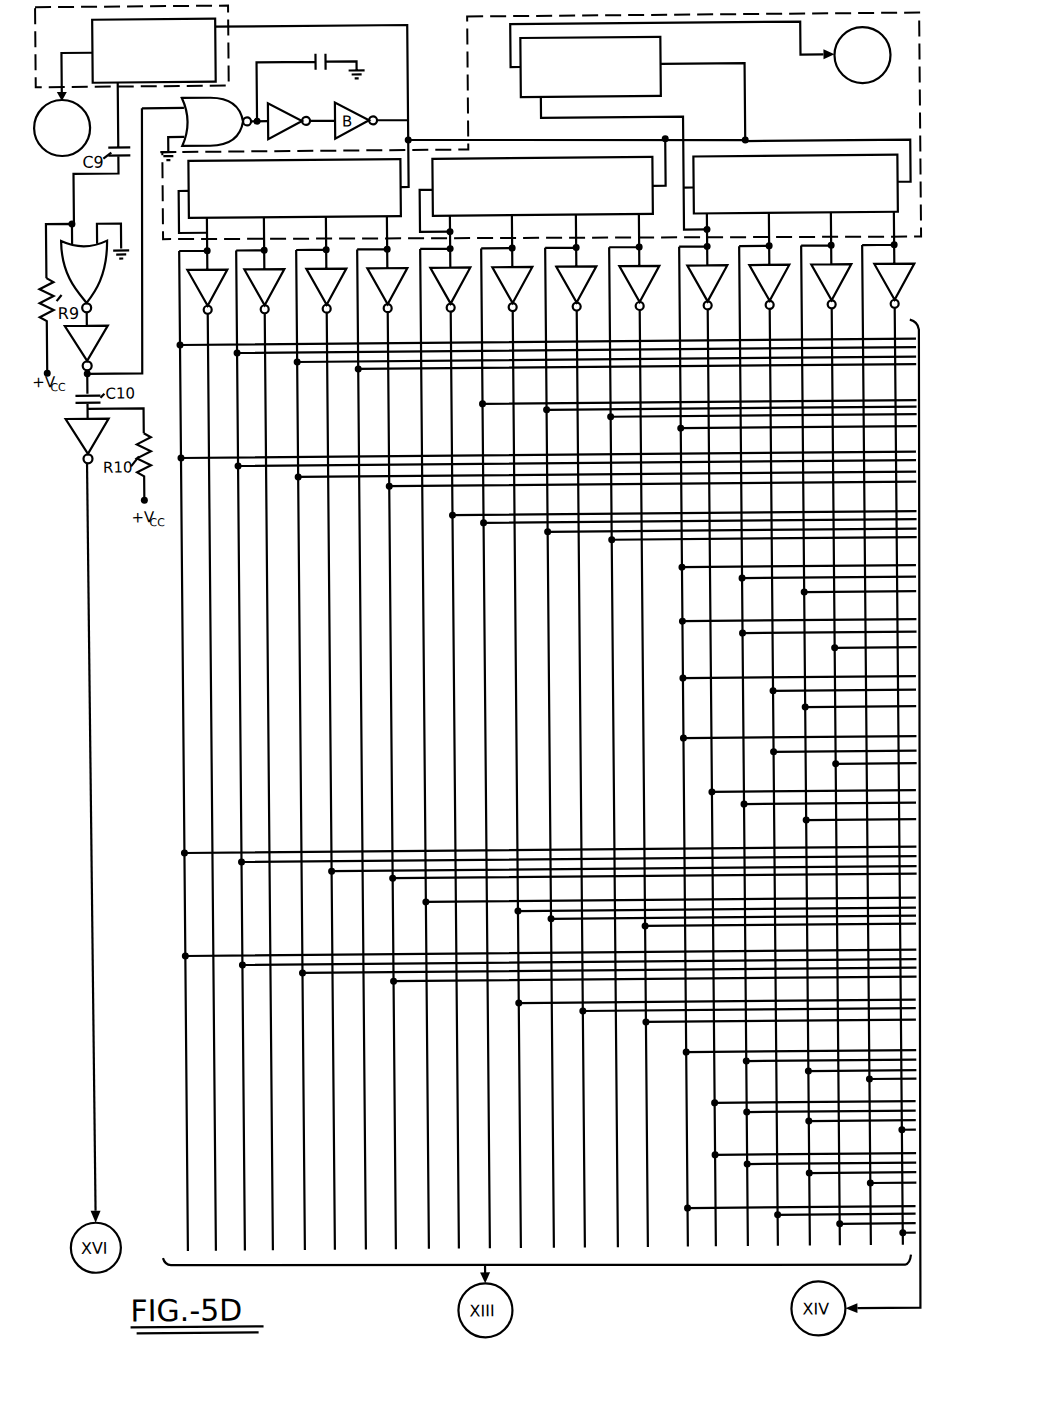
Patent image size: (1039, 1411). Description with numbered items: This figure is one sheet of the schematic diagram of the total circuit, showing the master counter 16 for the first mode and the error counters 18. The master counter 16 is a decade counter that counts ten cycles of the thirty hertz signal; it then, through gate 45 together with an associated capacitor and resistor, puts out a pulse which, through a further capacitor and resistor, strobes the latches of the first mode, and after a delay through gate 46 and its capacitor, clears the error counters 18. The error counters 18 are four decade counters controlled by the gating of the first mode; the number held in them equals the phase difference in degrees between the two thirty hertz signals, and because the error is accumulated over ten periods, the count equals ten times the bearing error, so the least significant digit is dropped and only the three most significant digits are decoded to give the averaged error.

The mode 1 master counter 16 is at (81, 13).
The error counters 18 is at (469, 61).
The gate 45 is at (84, 277).
The gate 46 is at (197, 128).